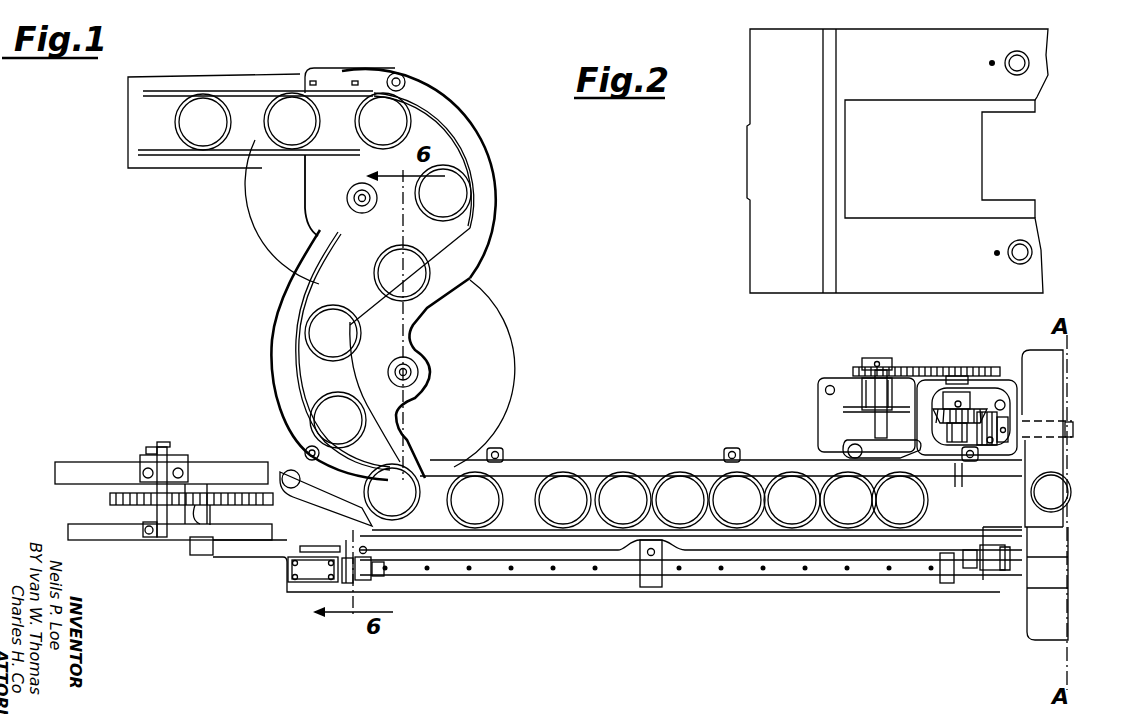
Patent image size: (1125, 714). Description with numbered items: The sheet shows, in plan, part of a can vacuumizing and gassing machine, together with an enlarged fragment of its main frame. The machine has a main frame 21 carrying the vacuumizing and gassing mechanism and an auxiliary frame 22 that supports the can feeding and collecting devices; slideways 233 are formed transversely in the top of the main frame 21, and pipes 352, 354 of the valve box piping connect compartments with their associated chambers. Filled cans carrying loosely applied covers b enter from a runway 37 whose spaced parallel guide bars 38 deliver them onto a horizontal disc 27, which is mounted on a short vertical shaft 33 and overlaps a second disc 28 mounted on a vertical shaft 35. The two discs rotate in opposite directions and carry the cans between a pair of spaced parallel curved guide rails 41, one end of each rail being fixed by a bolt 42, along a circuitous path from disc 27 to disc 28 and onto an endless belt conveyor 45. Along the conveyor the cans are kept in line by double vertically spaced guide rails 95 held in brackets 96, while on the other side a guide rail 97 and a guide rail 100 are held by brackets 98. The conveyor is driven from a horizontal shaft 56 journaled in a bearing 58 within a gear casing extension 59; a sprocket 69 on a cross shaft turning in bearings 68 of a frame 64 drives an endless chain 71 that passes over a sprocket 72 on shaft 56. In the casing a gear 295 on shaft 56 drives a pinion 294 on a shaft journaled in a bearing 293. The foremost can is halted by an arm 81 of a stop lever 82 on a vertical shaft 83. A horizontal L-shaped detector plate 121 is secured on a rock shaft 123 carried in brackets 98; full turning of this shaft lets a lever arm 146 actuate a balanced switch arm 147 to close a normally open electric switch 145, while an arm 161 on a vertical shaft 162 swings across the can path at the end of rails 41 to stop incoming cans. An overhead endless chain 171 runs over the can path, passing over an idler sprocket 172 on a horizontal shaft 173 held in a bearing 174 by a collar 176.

In FIG. 1, the main frame 21 is at (1036, 625).
In FIG. 2, the main frame 21 is at (763, 232).
In FIG. 1, the auxiliary frame 22 is at (262, 556).
In FIG. 1, the disc 27 is at (270, 230).
In FIG. 1, the disc 28 is at (505, 386).
In FIG. 1, the short vertical shaft 33 is at (361, 207).
In FIG. 1, the vertical shaft 35 is at (412, 373).
In FIG. 1, the runway 37 is at (146, 134).
In FIG. 1, the guide bars 38 is at (246, 91).
In FIG. 1, the curved guide rails 41 is at (489, 247).
In FIG. 1, the bolt 42 is at (407, 79).
In FIG. 1, the endless belt conveyor 45 is at (540, 478).
In FIG. 1, the horizontal shaft 56 is at (956, 441).
In FIG. 1, the bearing 58 is at (976, 398).
In FIG. 1, the gear casing extension 59 is at (930, 385).
In FIG. 1, the frame 64 is at (831, 428).
In FIG. 1, the bearings 68 is at (866, 393).
In FIG. 1, the sprocket 69 is at (870, 358).
In FIG. 1, the endless chain 71 is at (913, 367).
In FIG. 1, the sprocket 72 is at (968, 376).
In FIG. 1, the arm 81 is at (978, 492).
In FIG. 1, the stop lever 82 is at (882, 449).
In FIG. 1, the vertical shaft 83 is at (848, 450).
In FIG. 1, the guide rails 95 is at (600, 468).
In FIG. 1, the brackets 96 is at (499, 461).
In FIG. 1, the guide rail 97 is at (697, 518).
In FIG. 1, the brackets 98 is at (378, 565).
In FIG. 1, the guide rail 100 is at (691, 546).
In FIG. 1, the detector plate 121 is at (497, 569).
In FIG. 1, the rock shaft 123 is at (380, 578).
In FIG. 1, the electric switch 145 is at (312, 583).
In FIG. 1, the lever arm 146 is at (345, 548).
In FIG. 1, the switch arm 147 is at (312, 546).
In FIG. 1, the arm 161 is at (326, 499).
In FIG. 1, the vertical shaft 162 is at (288, 472).
In FIG. 1, the endless chain 171 is at (198, 507).
In FIG. 1, the idler sprocket 172 is at (147, 497).
In FIG. 1, the horizontal shaft 173 is at (165, 442).
In FIG. 1, the bearing 174 is at (181, 462).
In FIG. 1, the collar 176 is at (154, 447).
In FIG. 2, the slideways 233 is at (838, 268).
In FIG. 1, the bearing 293 is at (1012, 421).
In FIG. 1, the pinion 294 is at (986, 442).
In FIG. 1, the gear 295 is at (1003, 405).
In FIG. 2, the pipe 352 is at (1035, 250).
In FIG. 2, the pipe 354 is at (1030, 68).
In FIG. 1, the covers b is at (210, 142).